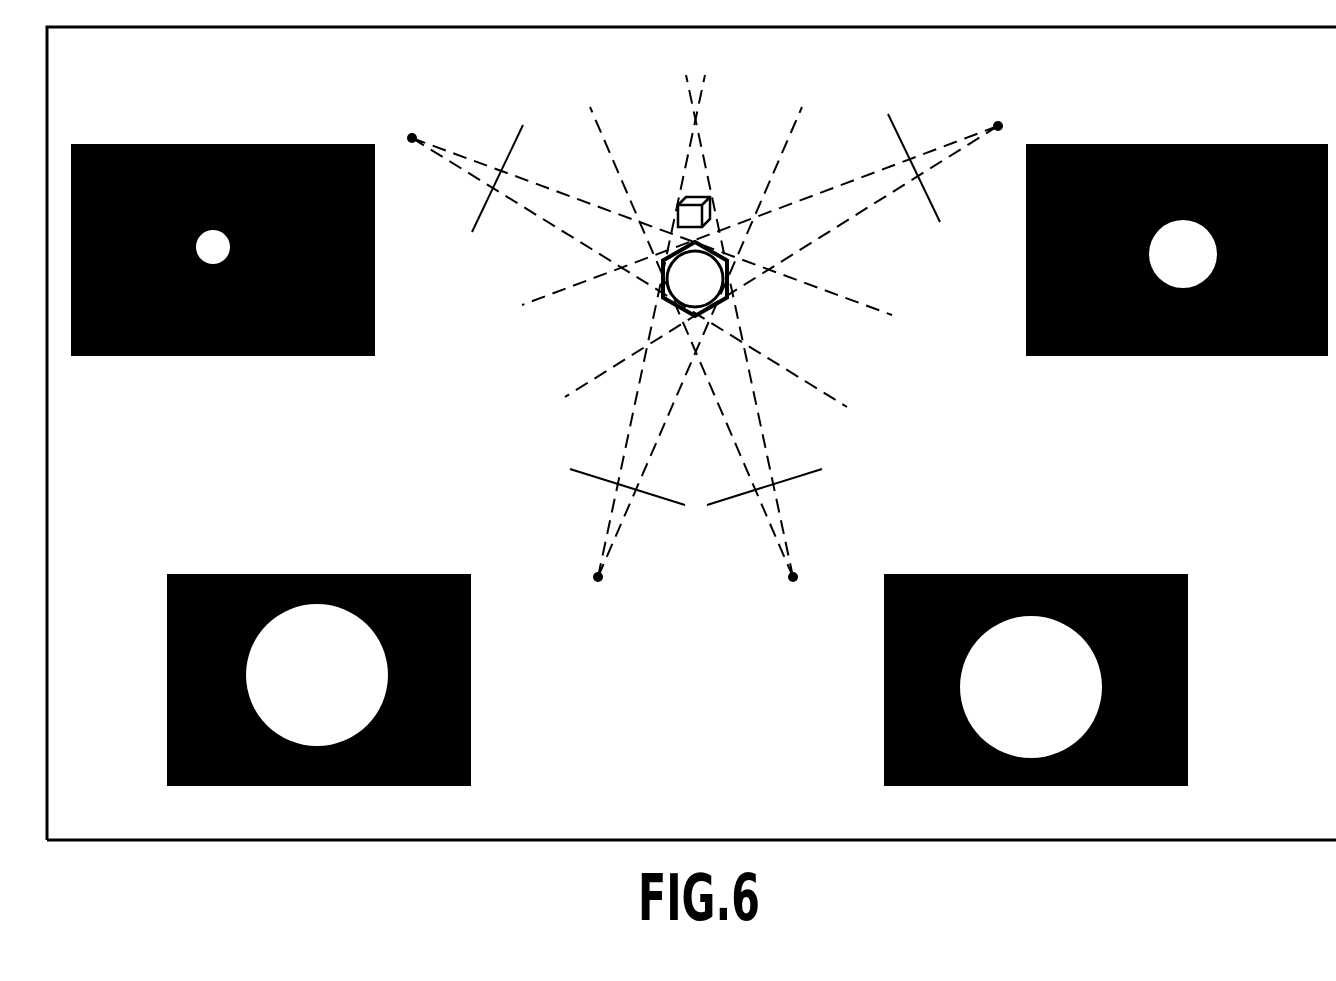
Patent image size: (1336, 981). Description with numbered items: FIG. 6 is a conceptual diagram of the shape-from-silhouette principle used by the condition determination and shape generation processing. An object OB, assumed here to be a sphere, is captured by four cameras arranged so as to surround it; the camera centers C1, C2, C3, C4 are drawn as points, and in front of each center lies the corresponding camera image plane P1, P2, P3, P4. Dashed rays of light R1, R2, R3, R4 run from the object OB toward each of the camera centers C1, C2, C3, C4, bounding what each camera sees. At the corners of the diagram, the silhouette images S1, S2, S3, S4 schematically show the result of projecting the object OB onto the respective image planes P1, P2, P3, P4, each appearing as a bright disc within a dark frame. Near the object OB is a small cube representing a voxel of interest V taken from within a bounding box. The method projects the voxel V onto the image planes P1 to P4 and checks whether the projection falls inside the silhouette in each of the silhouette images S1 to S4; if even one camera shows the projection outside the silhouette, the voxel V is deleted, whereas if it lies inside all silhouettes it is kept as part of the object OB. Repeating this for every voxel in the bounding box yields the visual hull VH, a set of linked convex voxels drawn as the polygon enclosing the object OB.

The silhouette image S1 is at (1055, 580).
The silhouette image S2 is at (337, 580).
The silhouette image S3 is at (1196, 150).
The silhouette image S4 is at (224, 150).
The camera center C1 is at (793, 582).
The camera center C2 is at (598, 582).
The camera center C3 is at (998, 121).
The camera center C4 is at (412, 133).
The camera image plane P1 is at (822, 469).
The camera image plane P2 is at (570, 469).
The camera image plane P3 is at (940, 222).
The camera image plane P4 is at (472, 232).
The ray of light R1 is at (767, 447).
The ray of light R2 is at (627, 447).
The ray of light R3 is at (852, 215).
The ray of light R4 is at (543, 217).
The voxel of interest V is at (693, 200).
The object OB is at (672, 280).
The visual hull VH is at (716, 296).